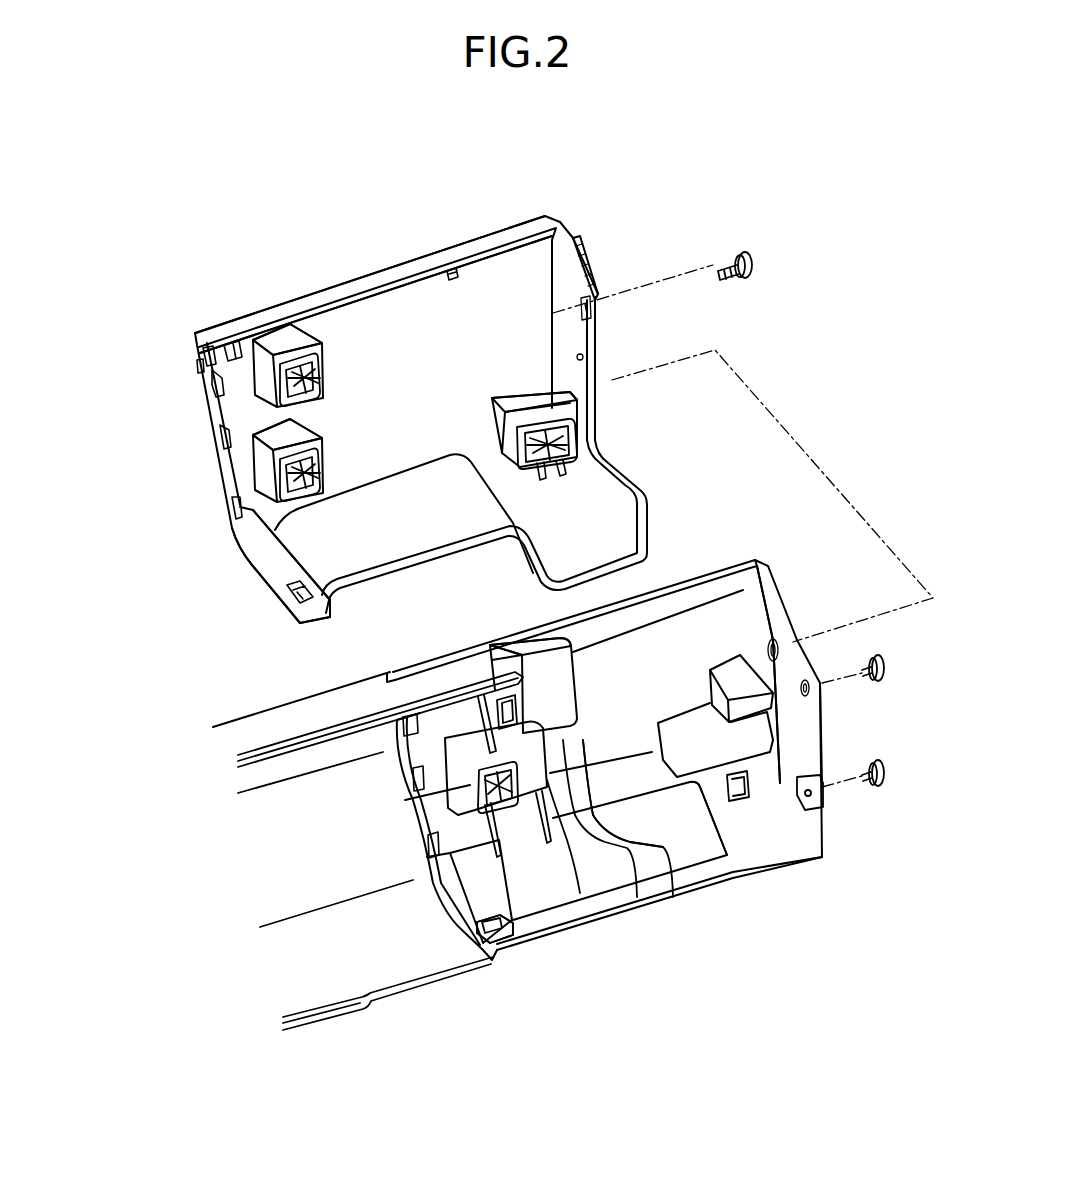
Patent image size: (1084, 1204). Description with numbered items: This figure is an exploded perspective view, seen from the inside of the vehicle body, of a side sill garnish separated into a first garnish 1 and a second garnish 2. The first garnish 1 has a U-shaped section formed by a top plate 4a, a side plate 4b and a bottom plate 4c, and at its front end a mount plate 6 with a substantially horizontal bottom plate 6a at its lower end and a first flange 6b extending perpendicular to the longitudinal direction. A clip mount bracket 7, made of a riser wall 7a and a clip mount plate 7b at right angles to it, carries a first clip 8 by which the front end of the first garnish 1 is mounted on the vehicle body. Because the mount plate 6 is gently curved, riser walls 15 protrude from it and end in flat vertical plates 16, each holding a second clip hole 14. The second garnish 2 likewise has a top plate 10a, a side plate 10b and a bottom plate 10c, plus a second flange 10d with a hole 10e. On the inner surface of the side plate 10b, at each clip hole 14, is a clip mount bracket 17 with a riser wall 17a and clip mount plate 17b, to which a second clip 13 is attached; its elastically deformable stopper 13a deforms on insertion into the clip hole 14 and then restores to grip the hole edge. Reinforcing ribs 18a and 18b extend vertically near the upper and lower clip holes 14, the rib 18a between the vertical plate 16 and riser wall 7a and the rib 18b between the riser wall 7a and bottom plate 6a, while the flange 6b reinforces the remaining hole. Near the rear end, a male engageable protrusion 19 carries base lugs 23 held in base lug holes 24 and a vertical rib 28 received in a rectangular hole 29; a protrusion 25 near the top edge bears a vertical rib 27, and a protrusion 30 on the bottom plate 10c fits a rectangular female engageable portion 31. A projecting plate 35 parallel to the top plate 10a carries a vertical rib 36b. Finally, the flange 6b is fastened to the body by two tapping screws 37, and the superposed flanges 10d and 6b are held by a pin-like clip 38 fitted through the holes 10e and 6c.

The first garnish 1 is at (786, 564).
The second garnish 2 is at (600, 250).
The top plate 4a is at (267, 722).
The side plate 4b is at (330, 770).
The bottom plate 4c is at (373, 953).
The mount plate 6 is at (675, 632).
The bottom plate 6a is at (688, 848).
The first flange 6b is at (808, 700).
The hole 6c is at (780, 623).
The clip mount bracket 7 is at (705, 932).
The riser wall 7a is at (672, 880).
The clip mount plate 7b is at (640, 880).
The first clip 8 is at (406, 803).
The top plate 10a is at (510, 237).
The side plate 10b is at (372, 367).
The bottom plate 10c is at (263, 557).
The second flange 10d is at (615, 505).
The hole 10e is at (588, 277).
The second clip 13 is at (326, 378).
The elastically deformable stopper 13a is at (563, 466).
The second clip hole 14 is at (516, 710).
The riser wall 15 is at (510, 652).
The vertical plate 16 is at (557, 691).
The clip mount bracket 17 is at (255, 224).
The riser wall 17a is at (297, 337).
The clip mount plate 17b is at (283, 353).
The reinforcing rib 18a is at (460, 733).
The reinforcing rib 18b is at (463, 850).
The male engageable protrusion 19 is at (215, 392).
The base lug 23 is at (197, 363).
The base lug hole 24 is at (403, 723).
The male engageable protrusion 25 is at (208, 348).
The vertical rib 27 is at (233, 344).
The vertical rib 28 is at (221, 426).
The rectangular hole 29 is at (413, 778).
The male engageable protrusion 30 is at (285, 596).
The female engageable portion 31 is at (505, 942).
The projecting plate 35 is at (450, 293).
The vertical rib 36b is at (452, 270).
The tapping screw 37 is at (882, 658).
The clip 38 is at (752, 258).